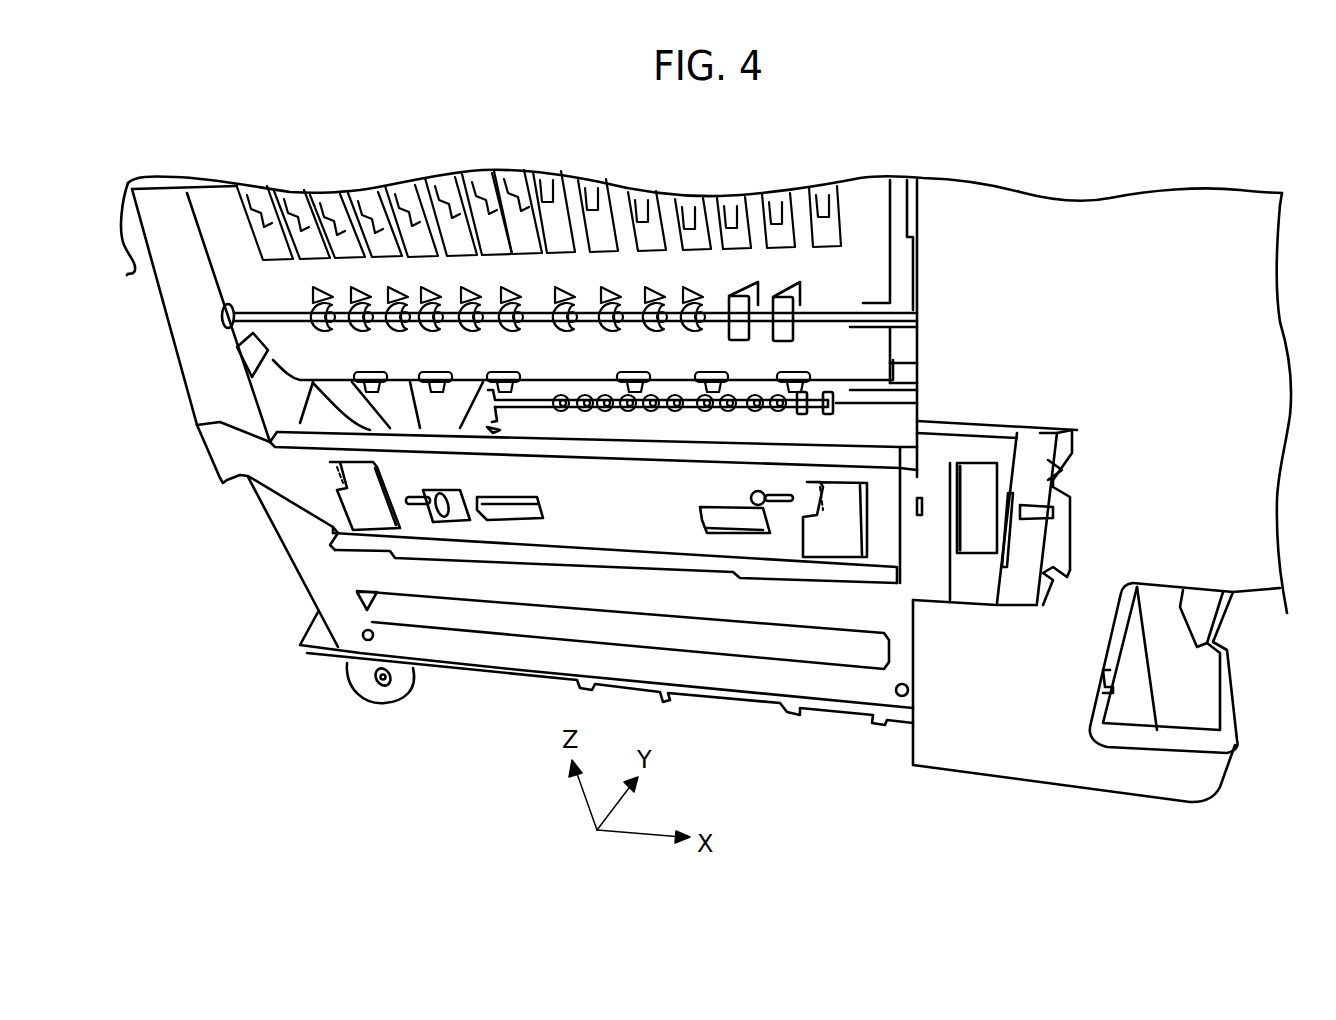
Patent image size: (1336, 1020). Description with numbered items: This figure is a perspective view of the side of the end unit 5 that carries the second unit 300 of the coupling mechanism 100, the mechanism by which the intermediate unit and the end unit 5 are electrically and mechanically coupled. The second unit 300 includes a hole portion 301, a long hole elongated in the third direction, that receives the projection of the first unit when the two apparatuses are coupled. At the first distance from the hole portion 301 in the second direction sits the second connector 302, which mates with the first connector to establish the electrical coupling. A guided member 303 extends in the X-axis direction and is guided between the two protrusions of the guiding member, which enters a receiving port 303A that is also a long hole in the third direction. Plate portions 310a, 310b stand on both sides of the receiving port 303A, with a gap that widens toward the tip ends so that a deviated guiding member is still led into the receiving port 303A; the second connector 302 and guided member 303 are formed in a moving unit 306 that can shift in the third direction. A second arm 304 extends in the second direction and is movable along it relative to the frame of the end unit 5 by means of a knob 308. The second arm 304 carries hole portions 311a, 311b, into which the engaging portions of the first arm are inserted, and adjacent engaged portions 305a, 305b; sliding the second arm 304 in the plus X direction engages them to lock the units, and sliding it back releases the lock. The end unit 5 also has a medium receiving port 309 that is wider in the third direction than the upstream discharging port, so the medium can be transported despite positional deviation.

The end unit 5 is at (977, 242).
The second unit 300 is at (1074, 472).
The coupling mechanism 100 is at (985, 414).
The hole portion 301 is at (441, 525).
The second connector 302 is at (977, 520).
The guided member 303 is at (1067, 510).
The receiving port 303A is at (1037, 463).
The second arm 304 is at (580, 490).
The engaged portion 305a is at (372, 503).
The engaged portion 305b is at (823, 513).
The moving unit 306 is at (950, 447).
The knob 308 is at (210, 415).
The medium receiving port 309 is at (533, 620).
The plate portion 310a is at (1053, 540).
The plate portion 310b is at (1023, 533).
The hole portion 311a is at (340, 468).
The hole portion 311b is at (848, 522).